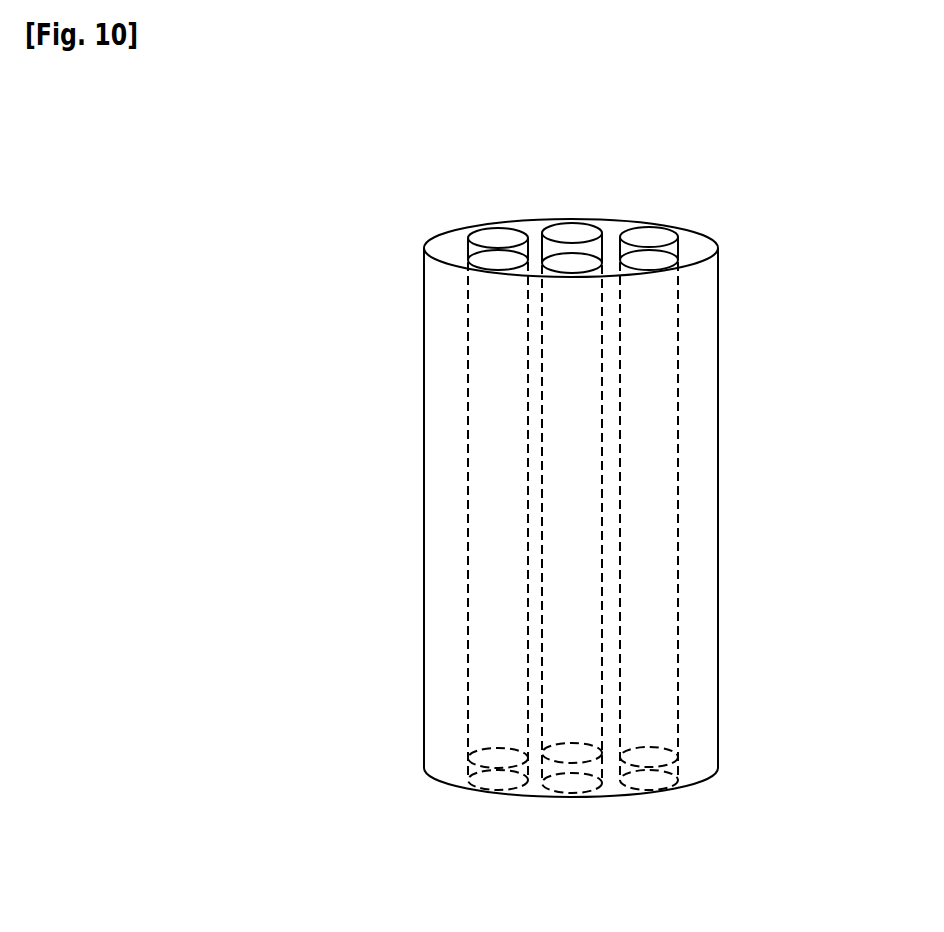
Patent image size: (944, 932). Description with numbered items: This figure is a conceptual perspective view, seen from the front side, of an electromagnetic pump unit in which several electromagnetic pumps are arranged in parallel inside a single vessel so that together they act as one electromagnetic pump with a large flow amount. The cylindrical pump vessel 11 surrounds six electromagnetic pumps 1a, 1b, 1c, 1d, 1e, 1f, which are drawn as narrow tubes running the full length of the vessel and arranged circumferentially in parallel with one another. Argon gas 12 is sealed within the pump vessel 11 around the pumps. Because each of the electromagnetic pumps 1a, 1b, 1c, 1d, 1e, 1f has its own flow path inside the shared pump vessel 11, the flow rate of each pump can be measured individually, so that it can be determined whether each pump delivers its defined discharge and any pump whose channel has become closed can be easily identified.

The pump vessel 11 is at (719, 313).
The argon gas 12 is at (438, 250).
The electromagnetic pump 1a is at (490, 443).
The electromagnetic pump 1b is at (483, 236).
The electromagnetic pump 1c is at (582, 230).
The electromagnetic pump 1d is at (660, 228).
The electromagnetic pump 1e is at (650, 522).
The electromagnetic pump 1f is at (569, 566).